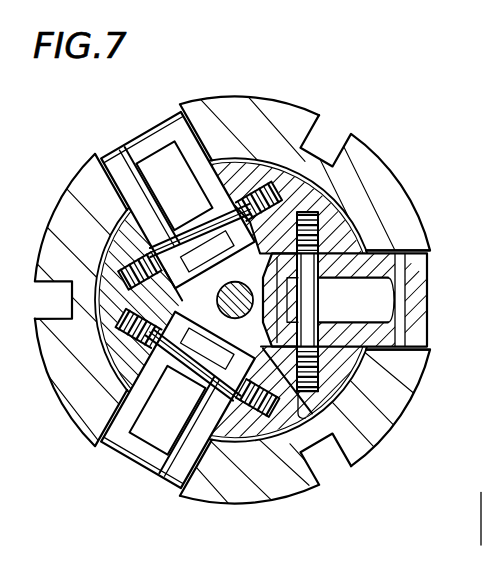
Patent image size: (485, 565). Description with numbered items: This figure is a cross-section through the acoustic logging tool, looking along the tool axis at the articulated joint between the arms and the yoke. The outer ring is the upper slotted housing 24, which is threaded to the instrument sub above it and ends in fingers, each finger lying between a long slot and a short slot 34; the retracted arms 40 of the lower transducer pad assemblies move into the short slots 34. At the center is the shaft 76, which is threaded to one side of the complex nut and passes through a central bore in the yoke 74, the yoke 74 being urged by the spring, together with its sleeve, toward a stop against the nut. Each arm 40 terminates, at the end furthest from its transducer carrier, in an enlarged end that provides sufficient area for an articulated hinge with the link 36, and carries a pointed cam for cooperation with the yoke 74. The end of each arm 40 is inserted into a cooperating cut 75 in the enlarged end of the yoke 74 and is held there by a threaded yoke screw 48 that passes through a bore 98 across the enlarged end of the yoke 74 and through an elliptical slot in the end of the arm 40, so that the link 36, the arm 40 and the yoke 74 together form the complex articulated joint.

The upper slotted housing 24 is at (221, 304).
The short slot 34 is at (452, 528).
The link 36 is at (374, 272).
The arm 40 is at (401, 299).
The yoke screw 48 is at (406, 352).
The yoke 74 is at (235, 300).
The cut 75 is at (267, 282).
The shaft 76 is at (232, 416).
The bore 98 is at (300, 474).